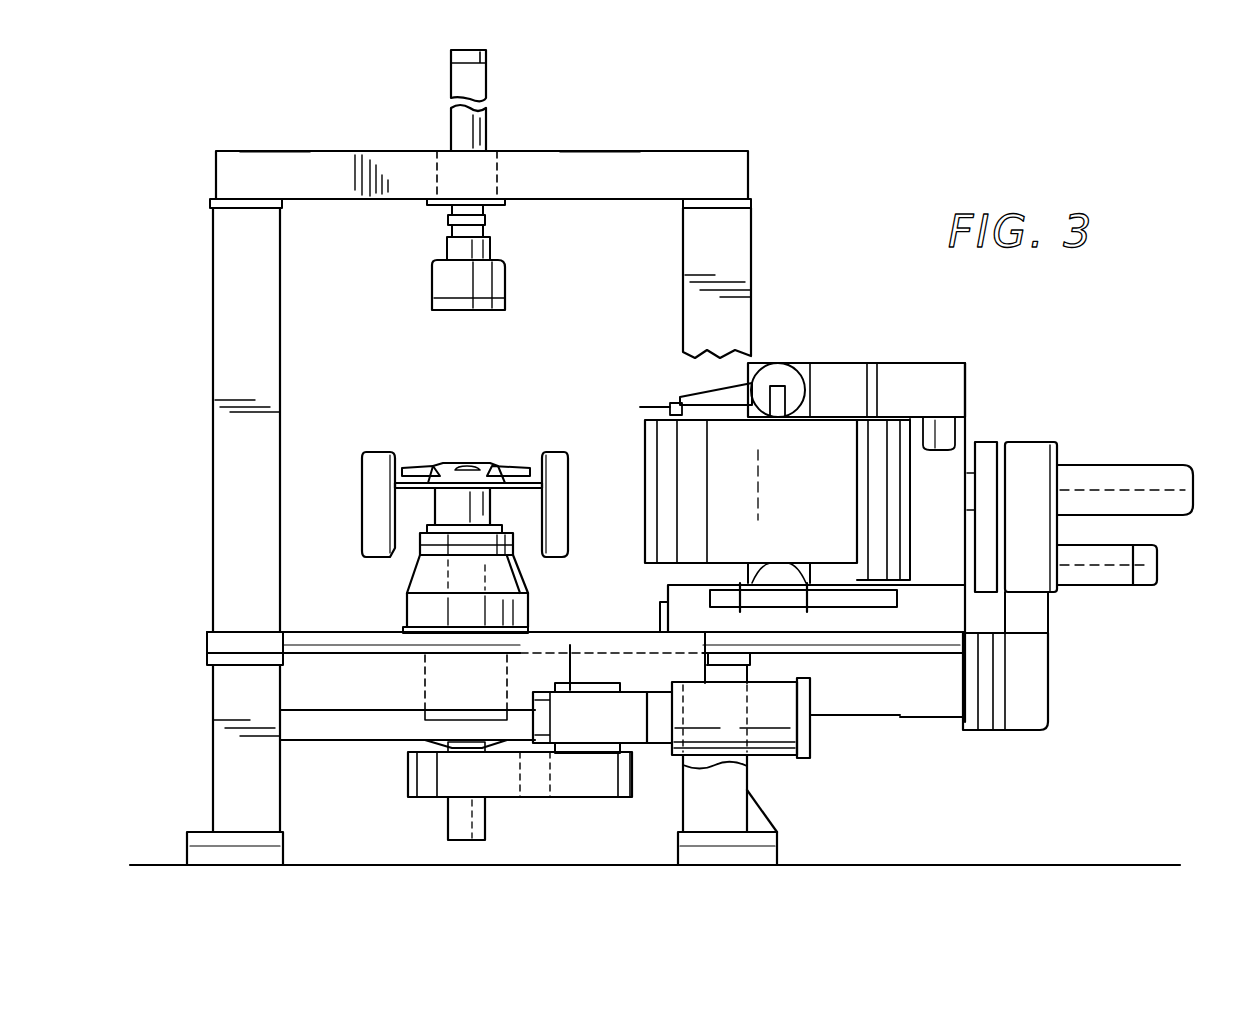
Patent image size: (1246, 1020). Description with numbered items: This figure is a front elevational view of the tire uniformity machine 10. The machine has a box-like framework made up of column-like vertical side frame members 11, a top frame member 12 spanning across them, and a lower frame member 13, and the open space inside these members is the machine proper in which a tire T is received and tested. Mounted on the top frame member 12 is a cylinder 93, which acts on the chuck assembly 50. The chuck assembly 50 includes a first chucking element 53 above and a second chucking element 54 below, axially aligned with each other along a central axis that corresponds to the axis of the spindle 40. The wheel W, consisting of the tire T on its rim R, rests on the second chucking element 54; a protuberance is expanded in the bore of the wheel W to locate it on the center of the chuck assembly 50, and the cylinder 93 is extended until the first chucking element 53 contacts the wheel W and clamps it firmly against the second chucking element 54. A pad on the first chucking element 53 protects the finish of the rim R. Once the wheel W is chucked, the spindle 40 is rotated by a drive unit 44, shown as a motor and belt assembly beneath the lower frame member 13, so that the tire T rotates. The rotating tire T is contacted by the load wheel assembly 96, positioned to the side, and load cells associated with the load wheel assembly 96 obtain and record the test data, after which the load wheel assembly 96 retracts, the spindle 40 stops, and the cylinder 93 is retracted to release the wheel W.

The tire uniformity machine 10 is at (804, 188).
The vertical side frame members 11 is at (230, 300).
The top frame member 12 is at (320, 168).
The lower frame member 13 is at (345, 640).
The cylinder 93 is at (485, 128).
The chuck assembly 50 is at (420, 292).
The first chucking element 53 is at (474, 314).
The wheel W is at (395, 443).
The tire T is at (372, 488).
The rim R is at (443, 468).
The second chucking element 54 is at (462, 462).
The spindle 40 is at (482, 506).
The load wheel assembly 96 is at (643, 477).
The drive unit 44 is at (498, 804).